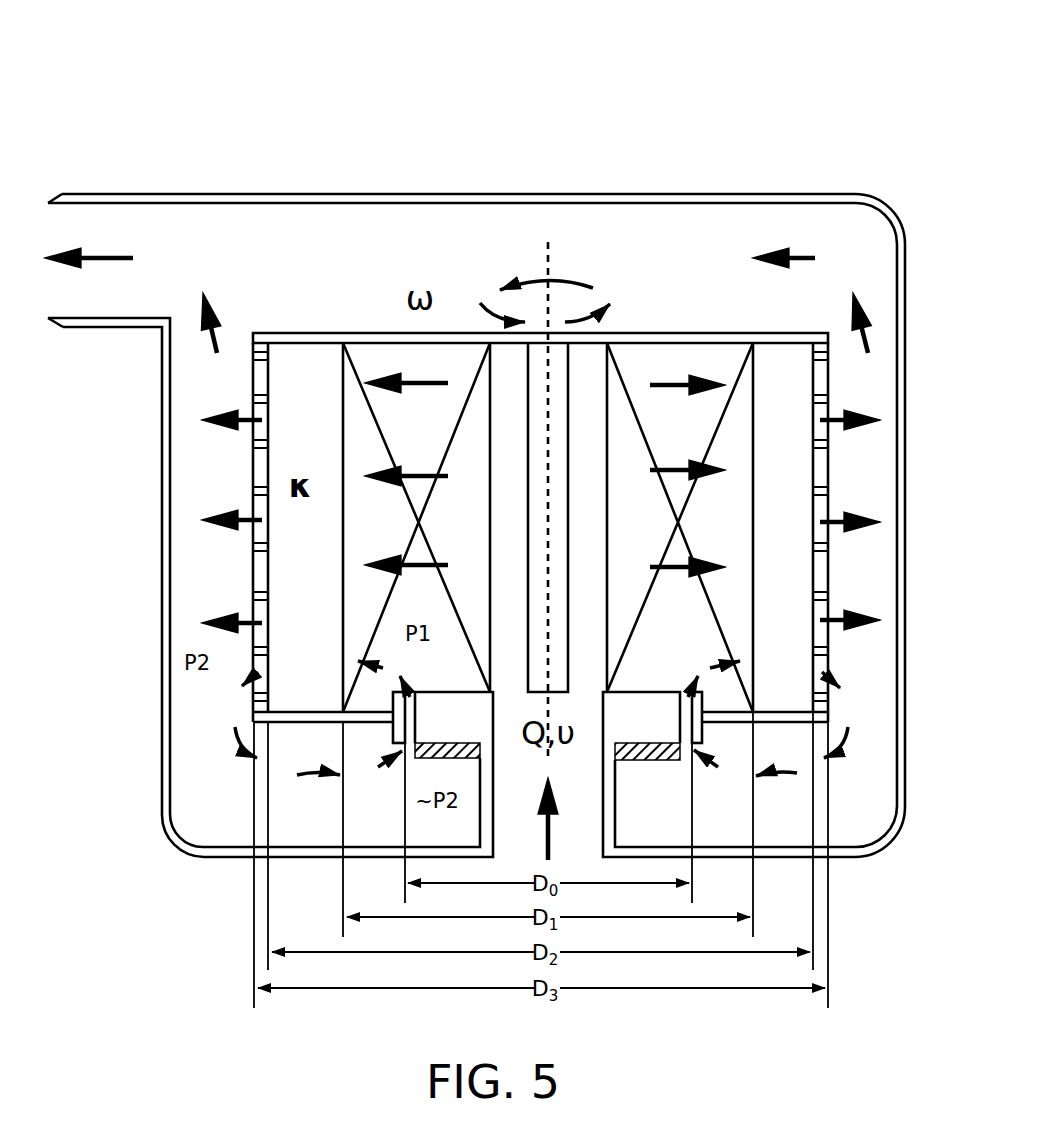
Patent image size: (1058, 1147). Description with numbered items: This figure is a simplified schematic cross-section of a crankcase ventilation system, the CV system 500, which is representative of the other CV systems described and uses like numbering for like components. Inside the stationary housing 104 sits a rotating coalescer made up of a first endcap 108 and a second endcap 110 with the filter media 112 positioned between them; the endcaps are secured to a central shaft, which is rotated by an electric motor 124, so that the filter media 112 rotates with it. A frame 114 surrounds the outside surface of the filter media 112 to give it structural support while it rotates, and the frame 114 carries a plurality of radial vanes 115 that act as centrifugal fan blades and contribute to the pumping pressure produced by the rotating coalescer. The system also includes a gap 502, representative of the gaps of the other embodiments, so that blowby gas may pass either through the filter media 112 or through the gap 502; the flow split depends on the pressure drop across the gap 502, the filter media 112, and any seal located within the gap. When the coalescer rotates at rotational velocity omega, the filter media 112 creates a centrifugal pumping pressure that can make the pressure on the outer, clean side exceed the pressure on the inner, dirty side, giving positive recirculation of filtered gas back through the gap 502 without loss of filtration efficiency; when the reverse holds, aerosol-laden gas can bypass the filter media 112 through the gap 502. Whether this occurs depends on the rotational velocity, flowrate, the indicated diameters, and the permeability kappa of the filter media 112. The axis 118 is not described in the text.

The CV system 500 is at (258, 85).
The housing 104 is at (148, 199).
The electric motor 124 is at (110, 255).
The axis of rotation 118 is at (553, 257).
The second endcap 110 is at (633, 333).
The first endcap 108 is at (200, 400).
The radial vanes 115 is at (258, 548).
The frame 114 is at (785, 476).
The filter media 112 is at (818, 716).
The gap 502 is at (688, 722).